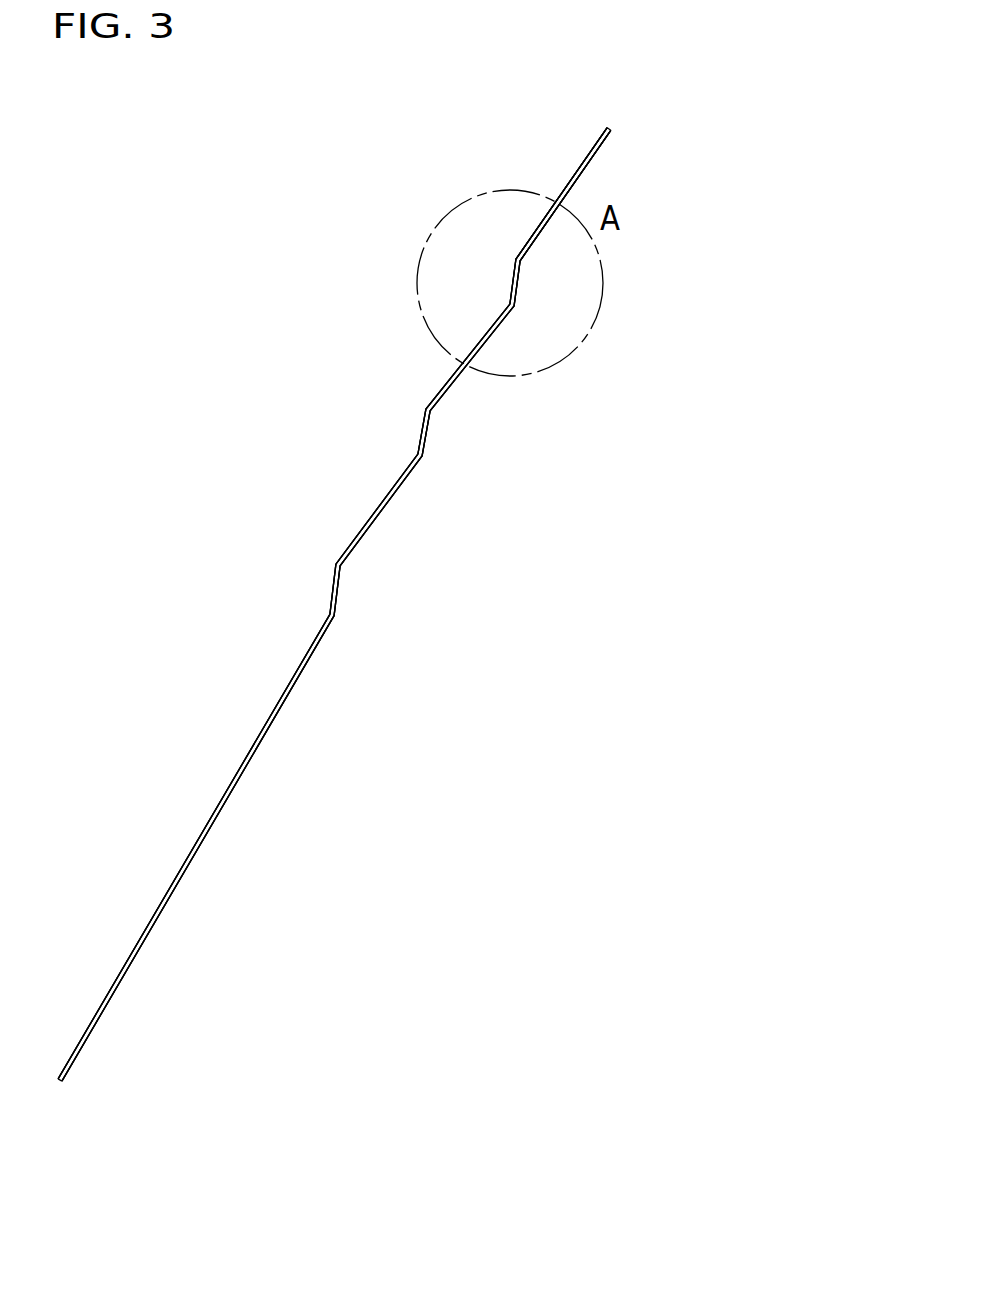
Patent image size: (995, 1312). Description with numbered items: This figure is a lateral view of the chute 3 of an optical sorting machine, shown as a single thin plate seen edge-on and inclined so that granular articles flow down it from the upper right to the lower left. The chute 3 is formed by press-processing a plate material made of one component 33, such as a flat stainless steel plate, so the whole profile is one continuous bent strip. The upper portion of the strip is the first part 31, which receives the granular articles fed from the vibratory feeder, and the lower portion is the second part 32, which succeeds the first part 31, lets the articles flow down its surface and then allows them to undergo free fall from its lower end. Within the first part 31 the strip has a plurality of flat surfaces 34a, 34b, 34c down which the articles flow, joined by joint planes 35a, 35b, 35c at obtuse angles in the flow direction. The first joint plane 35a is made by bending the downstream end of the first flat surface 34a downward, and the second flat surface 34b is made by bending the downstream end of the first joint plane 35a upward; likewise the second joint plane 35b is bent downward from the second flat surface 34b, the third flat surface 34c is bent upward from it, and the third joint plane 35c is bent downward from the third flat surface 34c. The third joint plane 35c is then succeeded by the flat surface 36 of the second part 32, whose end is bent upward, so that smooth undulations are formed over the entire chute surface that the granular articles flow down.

The chute 3 is at (205, 360).
The first part 31 is at (355, 628).
The second part 32 is at (87, 1095).
The component 33 is at (612, 131).
The first flat surface 34a is at (562, 197).
The second flat surface 34b is at (474, 351).
The third flat surface 34c is at (388, 497).
The first joint plane 35a is at (512, 276).
The second joint plane 35b is at (423, 432).
The third joint plane 35c is at (334, 588).
The flat surface of second part 36 is at (205, 826).